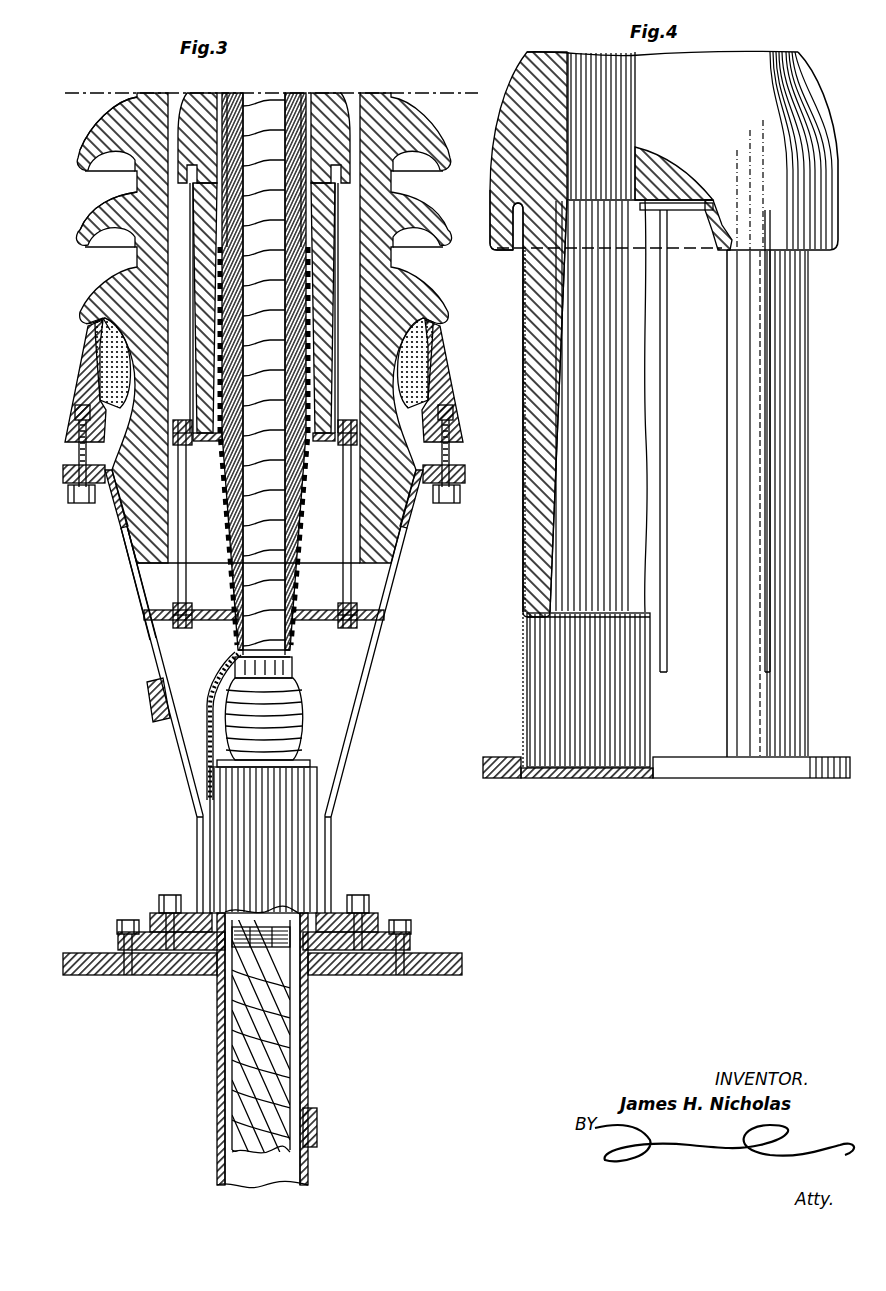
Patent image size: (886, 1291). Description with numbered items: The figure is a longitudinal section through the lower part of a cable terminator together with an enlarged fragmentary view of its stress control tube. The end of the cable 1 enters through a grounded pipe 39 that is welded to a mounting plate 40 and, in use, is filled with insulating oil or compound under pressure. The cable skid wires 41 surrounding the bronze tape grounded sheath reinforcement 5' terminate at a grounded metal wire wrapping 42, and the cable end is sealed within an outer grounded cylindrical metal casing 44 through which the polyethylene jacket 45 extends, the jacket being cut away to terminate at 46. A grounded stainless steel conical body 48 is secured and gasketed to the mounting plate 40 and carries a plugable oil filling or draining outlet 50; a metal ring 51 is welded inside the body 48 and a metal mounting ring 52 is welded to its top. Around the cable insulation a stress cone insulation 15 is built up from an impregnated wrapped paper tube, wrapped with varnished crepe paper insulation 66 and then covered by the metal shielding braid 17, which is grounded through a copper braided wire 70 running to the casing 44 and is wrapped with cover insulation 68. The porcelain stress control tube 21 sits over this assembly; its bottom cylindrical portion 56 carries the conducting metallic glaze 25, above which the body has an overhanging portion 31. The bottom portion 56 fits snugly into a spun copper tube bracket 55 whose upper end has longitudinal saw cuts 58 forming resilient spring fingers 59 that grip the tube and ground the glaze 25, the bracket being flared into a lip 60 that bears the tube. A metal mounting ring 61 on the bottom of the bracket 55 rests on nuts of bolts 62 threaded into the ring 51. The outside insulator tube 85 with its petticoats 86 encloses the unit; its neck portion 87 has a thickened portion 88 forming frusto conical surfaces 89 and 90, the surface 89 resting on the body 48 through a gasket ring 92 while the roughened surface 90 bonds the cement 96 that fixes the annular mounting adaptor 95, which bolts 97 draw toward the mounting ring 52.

In FIG. 3, the cable 1 is at (280, 1030).
In FIG. 3, the bronze tape grounded sheath reinforcement 5' is at (311, 1119).
In FIG. 3, the stress cone insulation 15 is at (290, 498).
In FIG. 3, the metal shielding braid 17 is at (193, 400).
In FIG. 3, the stress control tube 21 is at (333, 113).
In FIG. 4, the stress control tube 21 is at (507, 122).
In FIG. 4, the conducting metallic glaze 25 is at (523, 550).
In FIG. 4, the overhanging portion 31 is at (496, 233).
In FIG. 3, the grounded pipe 39 is at (308, 1072).
In FIG. 3, the mounting plate 40 is at (424, 972).
In FIG. 3, the cable skid wires 41 is at (294, 995).
In FIG. 3, the grounded metal wire wrapping 42 is at (258, 948).
In FIG. 3, the grounded cylindrical metal casing 44 is at (307, 857).
In FIG. 3, the jacket of insulation 45 is at (292, 665).
In FIG. 3, the jacket termination 46 is at (243, 650).
In FIG. 3, the conical body 48 is at (341, 772).
In FIG. 3, the plugable outlet 50 is at (155, 702).
In FIG. 3, the metal ring 51 is at (148, 610).
In FIG. 3, the metal mounting ring 52 is at (68, 485).
In FIG. 3, the tube bracket 55 is at (339, 262).
In FIG. 4, the tube bracket 55 is at (540, 710).
In FIG. 4, the bottom cylindrical portion 56 is at (539, 527).
In FIG. 4, the longitudinal saw cuts 58 is at (765, 650).
In FIG. 4, the resilient spring fingers 59 is at (720, 470).
In FIG. 4, the lip 60 is at (512, 250).
In FIG. 3, the metal mounting ring 61 is at (347, 445).
In FIG. 4, the metal mounting ring 61 is at (483, 766).
In FIG. 3, the bolts 62 is at (186, 524).
In FIG. 3, the crepe paper insulation 66 is at (307, 330).
In FIG. 3, the cover insulation 68 is at (311, 385).
In FIG. 3, the copper braided wire 70 is at (209, 705).
In FIG. 3, the outside insulator tube 85 is at (153, 100).
In FIG. 3, the petticoats 86 is at (75, 150).
In FIG. 3, the neck portion 87 is at (135, 558).
In FIG. 3, the thickened portion 88 is at (458, 448).
In FIG. 3, the frusto conical surface 89 is at (125, 535).
In FIG. 3, the frusto conical surface 90 is at (128, 362).
In FIG. 3, the gasket ring 92 is at (112, 510).
In FIG. 3, the mounting adaptor 95 is at (74, 392).
In FIG. 3, the cement 96 is at (104, 348).
In FIG. 3, the bolts 97 is at (77, 442).